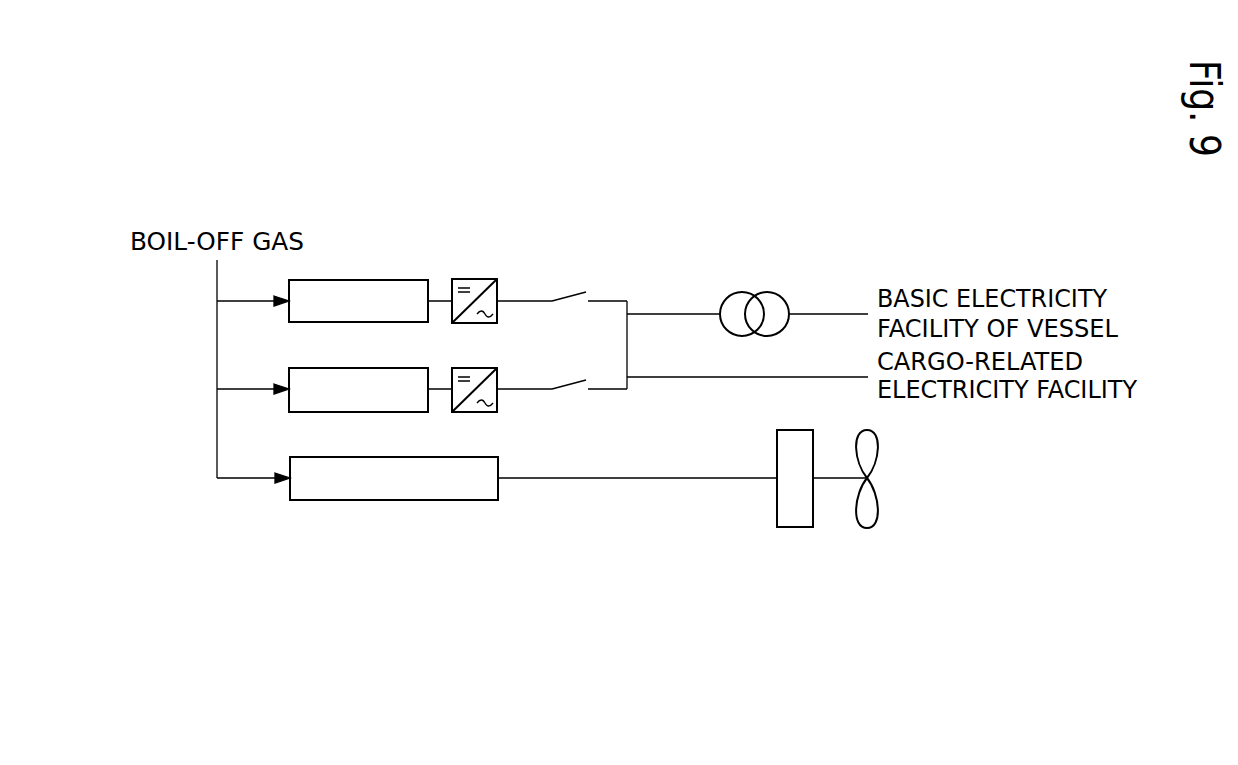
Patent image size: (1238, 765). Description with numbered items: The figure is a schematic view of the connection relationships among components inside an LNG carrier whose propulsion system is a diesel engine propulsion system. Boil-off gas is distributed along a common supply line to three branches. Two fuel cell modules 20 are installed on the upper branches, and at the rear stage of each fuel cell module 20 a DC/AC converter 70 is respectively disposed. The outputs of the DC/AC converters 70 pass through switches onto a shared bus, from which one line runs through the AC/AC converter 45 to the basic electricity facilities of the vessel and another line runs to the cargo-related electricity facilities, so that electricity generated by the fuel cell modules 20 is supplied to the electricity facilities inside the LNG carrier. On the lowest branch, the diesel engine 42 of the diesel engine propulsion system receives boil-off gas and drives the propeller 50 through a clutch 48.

The fuel cell module 20 is at (398, 280).
The DC/AC converter 70 is at (473, 279).
The AC/AC converter 45 is at (765, 293).
The diesel engine 42 is at (394, 500).
The clutch 48 is at (795, 527).
The propeller 50 is at (867, 528).